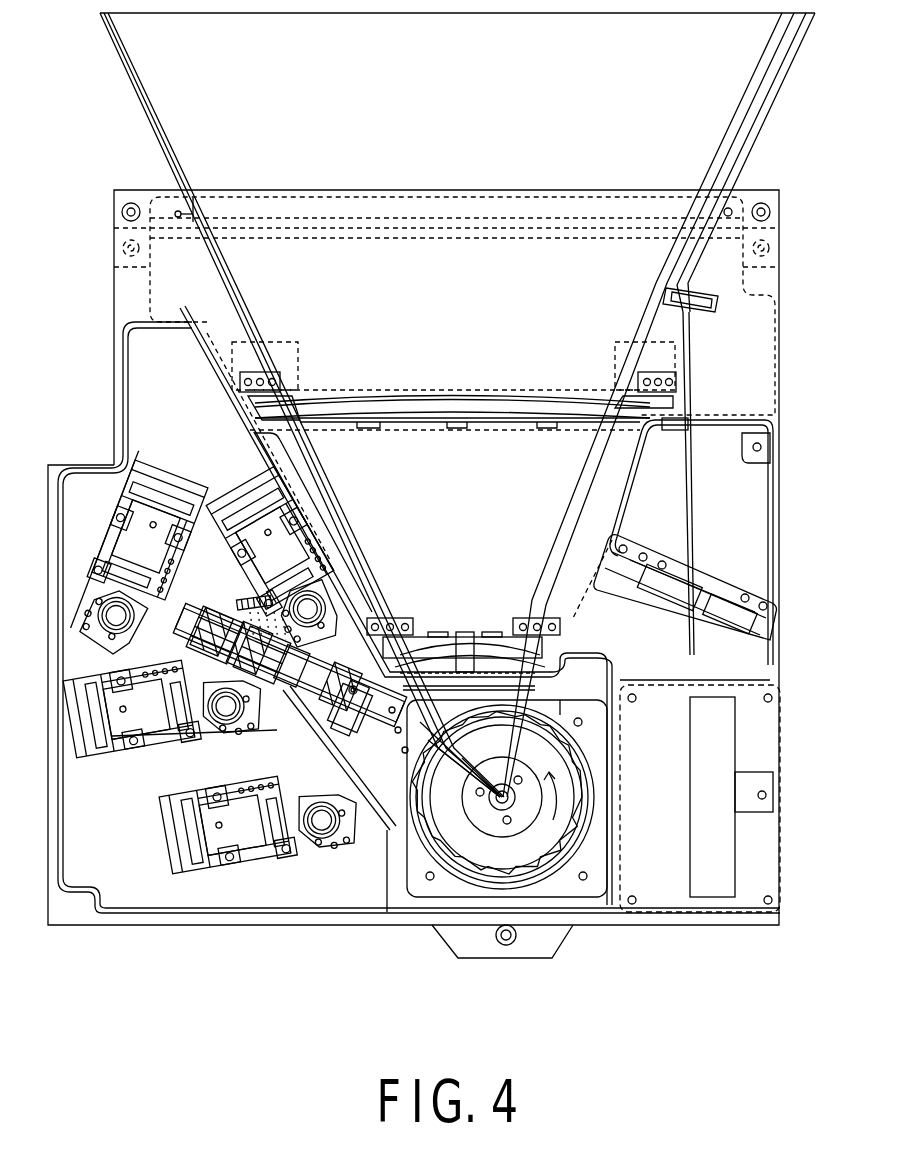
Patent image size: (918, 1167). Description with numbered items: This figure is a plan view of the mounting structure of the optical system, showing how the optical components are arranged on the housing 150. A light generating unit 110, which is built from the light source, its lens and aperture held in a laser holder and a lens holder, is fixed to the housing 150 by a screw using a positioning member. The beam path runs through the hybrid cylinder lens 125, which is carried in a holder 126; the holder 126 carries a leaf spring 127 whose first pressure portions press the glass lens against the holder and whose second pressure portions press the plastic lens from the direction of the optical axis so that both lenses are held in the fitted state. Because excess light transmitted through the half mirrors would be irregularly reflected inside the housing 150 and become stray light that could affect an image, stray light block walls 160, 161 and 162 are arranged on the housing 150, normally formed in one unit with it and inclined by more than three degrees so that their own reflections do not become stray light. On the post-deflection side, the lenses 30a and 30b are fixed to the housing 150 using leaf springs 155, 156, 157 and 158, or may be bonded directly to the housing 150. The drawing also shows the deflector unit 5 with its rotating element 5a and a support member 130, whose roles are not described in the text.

The disk drive unit 5 is at (562, 892).
The disk turntable 5a is at (407, 858).
The lens 30a is at (485, 647).
The lens 30b is at (505, 402).
The light generating unit 110 is at (93, 573).
The hybrid cylinder lens 125 is at (342, 740).
The holder 126 is at (347, 730).
The leaf spring 127 is at (345, 726).
The pickup support 130 is at (720, 293).
The housing 150 is at (290, 925).
The leaf spring 155 is at (420, 618).
The leaf spring 156 is at (575, 618).
The leaf spring 157 is at (283, 370).
The leaf spring 158 is at (672, 368).
The stray light block wall 160 is at (207, 592).
The stray light block wall 161 is at (235, 608).
The stray light block wall 162 is at (157, 662).